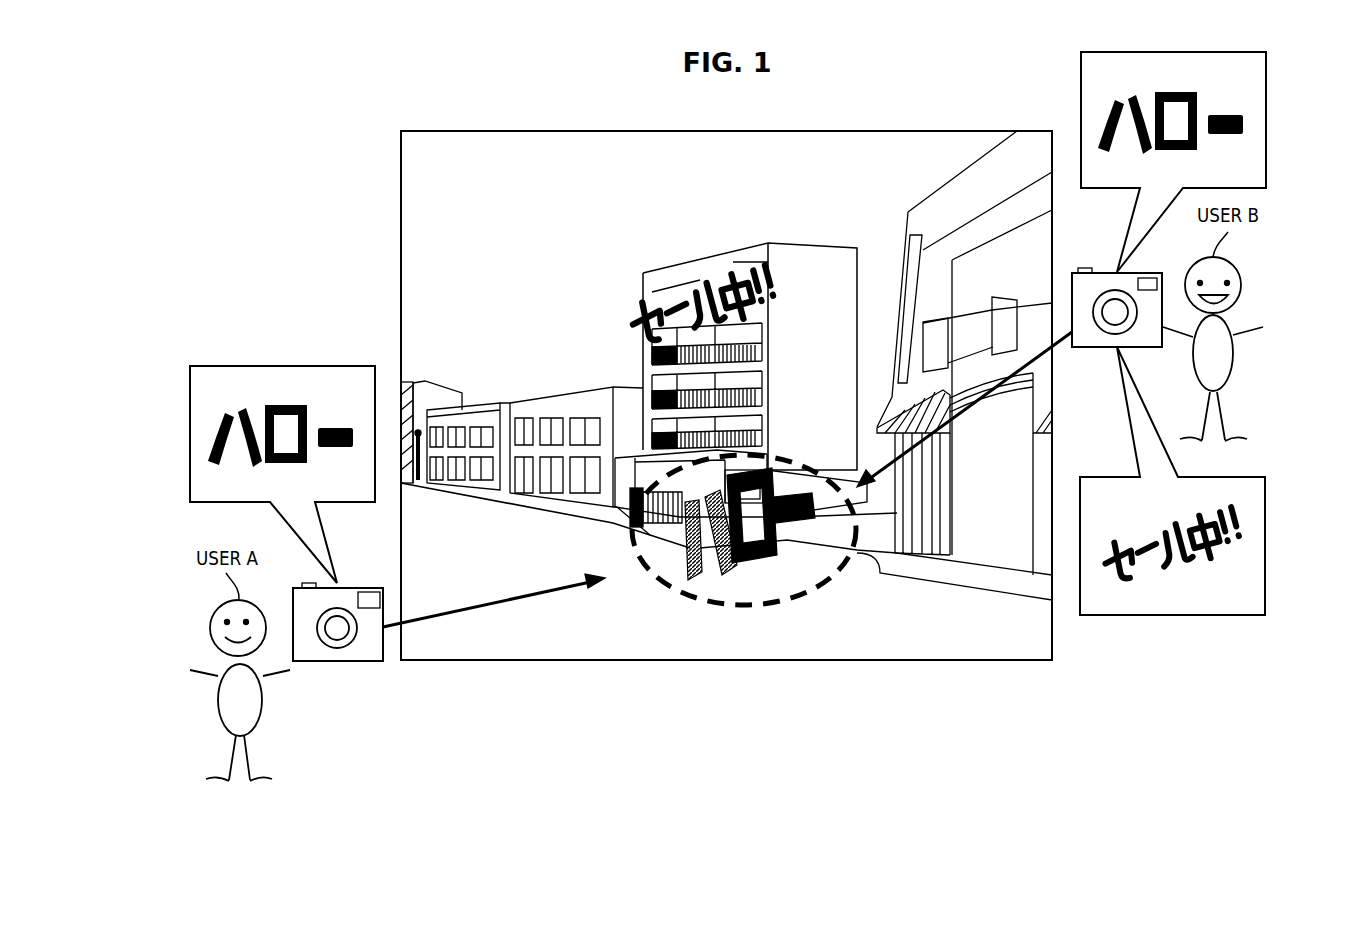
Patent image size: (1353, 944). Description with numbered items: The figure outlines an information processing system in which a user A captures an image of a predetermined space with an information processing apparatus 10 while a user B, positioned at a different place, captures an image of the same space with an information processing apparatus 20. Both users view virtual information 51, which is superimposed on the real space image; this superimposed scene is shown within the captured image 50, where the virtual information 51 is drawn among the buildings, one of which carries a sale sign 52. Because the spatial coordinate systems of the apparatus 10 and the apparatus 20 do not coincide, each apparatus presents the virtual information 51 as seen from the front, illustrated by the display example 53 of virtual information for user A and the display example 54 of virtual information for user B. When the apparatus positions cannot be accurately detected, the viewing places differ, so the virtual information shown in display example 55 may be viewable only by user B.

The information processing apparatus 10 is at (353, 588).
The information processing apparatus 20 is at (1105, 272).
The captured image / display screen 50 is at (868, 131).
The virtual information 51 is at (745, 606).
The building with sale sign 52 is at (708, 285).
The display example of virtual information 53 is at (280, 366).
The display example of virtual information 54 is at (1081, 83).
The display example of virtual information 55 is at (1175, 615).